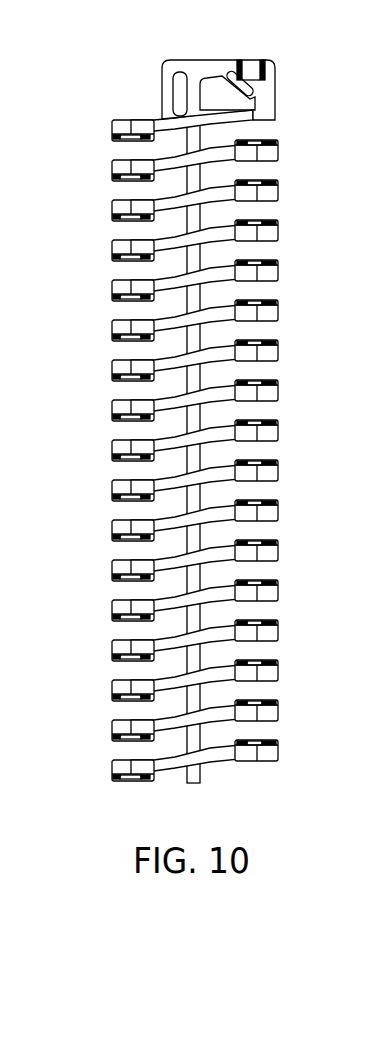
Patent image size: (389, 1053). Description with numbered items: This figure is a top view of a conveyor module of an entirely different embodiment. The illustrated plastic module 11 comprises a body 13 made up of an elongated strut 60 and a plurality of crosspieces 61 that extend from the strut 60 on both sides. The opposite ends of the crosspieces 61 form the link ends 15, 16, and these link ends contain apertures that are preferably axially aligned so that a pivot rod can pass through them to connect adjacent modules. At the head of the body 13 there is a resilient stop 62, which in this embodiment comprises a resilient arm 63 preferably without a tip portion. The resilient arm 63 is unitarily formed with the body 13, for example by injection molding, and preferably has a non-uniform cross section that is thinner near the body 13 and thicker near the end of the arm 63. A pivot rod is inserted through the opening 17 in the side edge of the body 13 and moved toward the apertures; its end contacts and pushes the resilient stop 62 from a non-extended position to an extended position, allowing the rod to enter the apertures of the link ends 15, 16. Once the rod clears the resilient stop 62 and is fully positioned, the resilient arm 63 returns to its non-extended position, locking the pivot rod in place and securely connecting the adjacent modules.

The plastic module 11 is at (268, 476).
The body 13 is at (270, 393).
The link end 15 is at (115, 402).
The link end 16 is at (270, 230).
The opening 17 is at (257, 62).
The elongated strut 60 is at (187, 226).
The crosspiece 61 is at (167, 288).
The resilient stop 62 is at (257, 88).
The resilient arm 63 is at (237, 80).